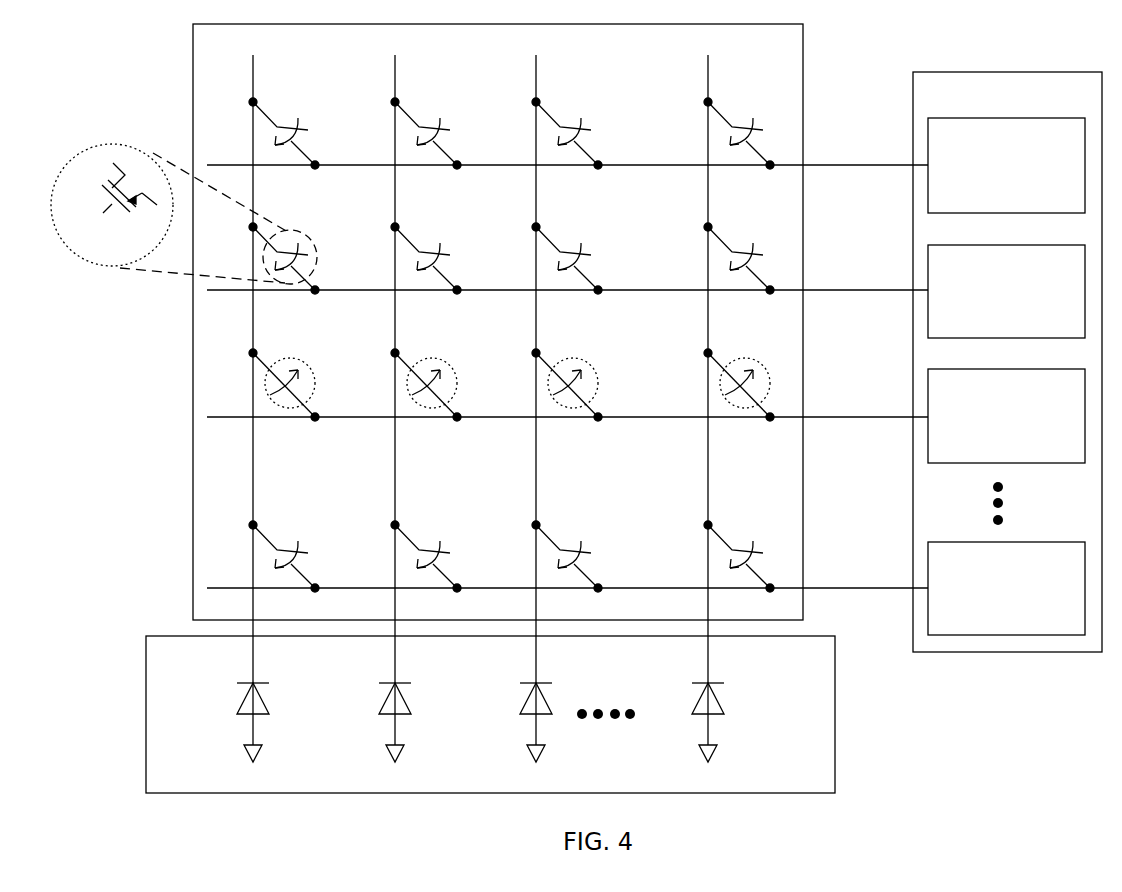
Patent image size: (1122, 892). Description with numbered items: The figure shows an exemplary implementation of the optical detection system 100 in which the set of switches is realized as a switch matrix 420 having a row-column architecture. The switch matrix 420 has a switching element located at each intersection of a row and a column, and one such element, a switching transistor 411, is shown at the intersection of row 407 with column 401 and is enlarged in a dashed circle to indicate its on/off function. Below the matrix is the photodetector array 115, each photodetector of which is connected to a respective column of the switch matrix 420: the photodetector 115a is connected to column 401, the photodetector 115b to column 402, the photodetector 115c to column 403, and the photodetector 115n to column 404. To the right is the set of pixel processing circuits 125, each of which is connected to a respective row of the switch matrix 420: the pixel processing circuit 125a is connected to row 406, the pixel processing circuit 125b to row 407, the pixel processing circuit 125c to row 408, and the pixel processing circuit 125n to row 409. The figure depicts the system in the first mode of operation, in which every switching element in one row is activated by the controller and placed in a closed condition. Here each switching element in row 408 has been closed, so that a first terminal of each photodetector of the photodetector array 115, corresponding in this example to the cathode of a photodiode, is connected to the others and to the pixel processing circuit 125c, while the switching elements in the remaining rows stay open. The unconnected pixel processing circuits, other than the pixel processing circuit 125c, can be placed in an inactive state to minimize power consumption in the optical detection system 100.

The optical detection system 100 is at (992, 45).
The photodetector array 115 is at (814, 663).
The photodetector 115a is at (218, 703).
The photodetector 115b is at (359, 703).
The photodetector 115c is at (500, 705).
The photodetector 115n is at (672, 703).
The set of pixel processing circuits 125 is at (1089, 100).
The pixel processing circuit 125a is at (1037, 143).
The pixel processing circuit 125b is at (1037, 270).
The pixel processing circuit 125c is at (1037, 394).
The pixel processing circuit 125n is at (1037, 567).
The column 401 is at (252, 87).
The column 402 is at (394, 87).
The column 403 is at (535, 87).
The column 404 is at (707, 87).
The row 406 is at (835, 165).
The row 407 is at (835, 290).
The row 408 is at (835, 417).
The row 409 is at (835, 588).
The switching transistor 411 is at (115, 144).
The switch matrix 420 is at (784, 51).